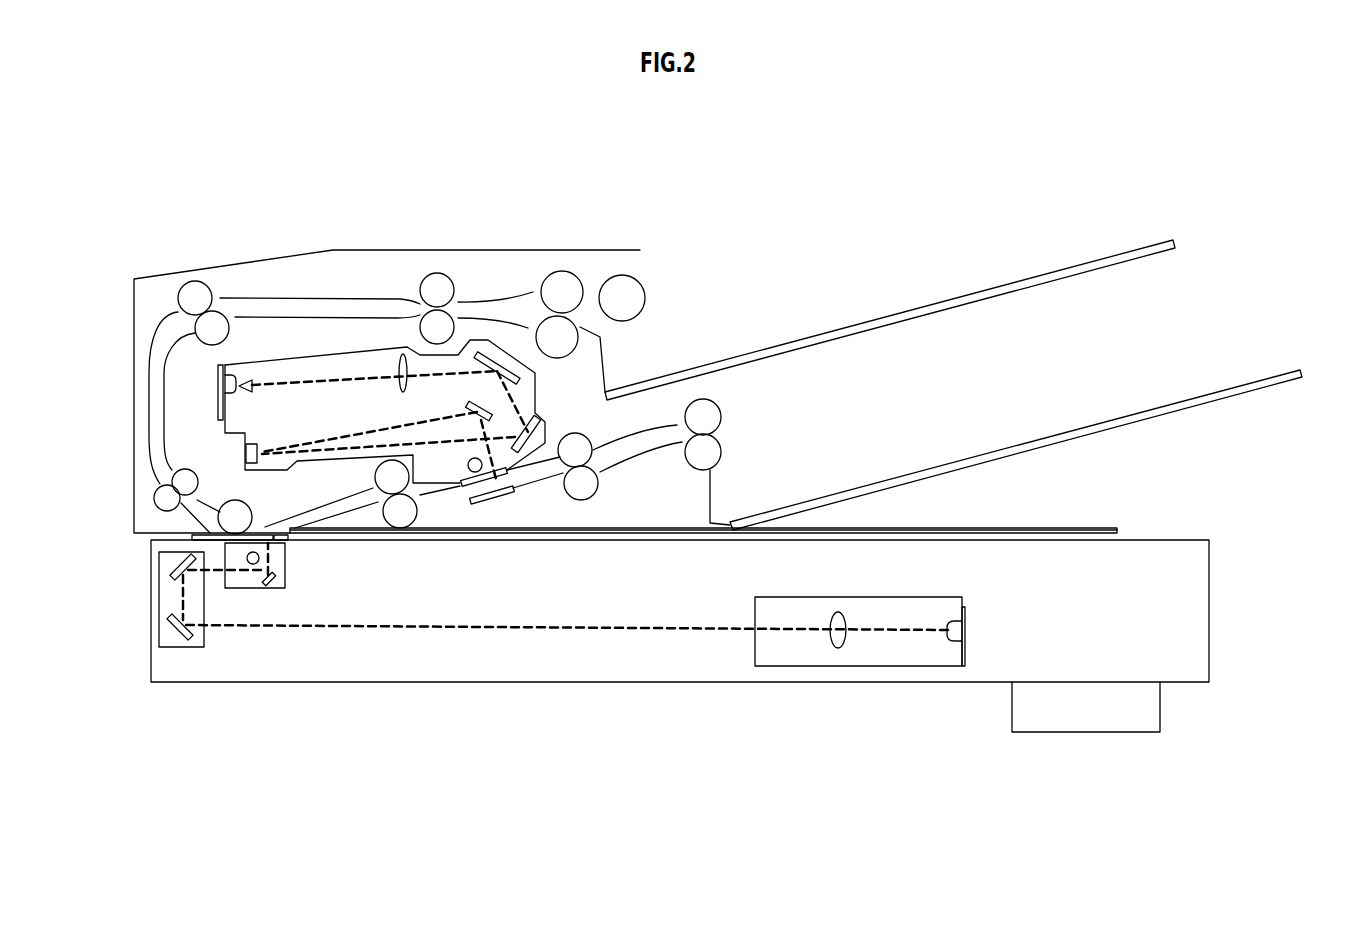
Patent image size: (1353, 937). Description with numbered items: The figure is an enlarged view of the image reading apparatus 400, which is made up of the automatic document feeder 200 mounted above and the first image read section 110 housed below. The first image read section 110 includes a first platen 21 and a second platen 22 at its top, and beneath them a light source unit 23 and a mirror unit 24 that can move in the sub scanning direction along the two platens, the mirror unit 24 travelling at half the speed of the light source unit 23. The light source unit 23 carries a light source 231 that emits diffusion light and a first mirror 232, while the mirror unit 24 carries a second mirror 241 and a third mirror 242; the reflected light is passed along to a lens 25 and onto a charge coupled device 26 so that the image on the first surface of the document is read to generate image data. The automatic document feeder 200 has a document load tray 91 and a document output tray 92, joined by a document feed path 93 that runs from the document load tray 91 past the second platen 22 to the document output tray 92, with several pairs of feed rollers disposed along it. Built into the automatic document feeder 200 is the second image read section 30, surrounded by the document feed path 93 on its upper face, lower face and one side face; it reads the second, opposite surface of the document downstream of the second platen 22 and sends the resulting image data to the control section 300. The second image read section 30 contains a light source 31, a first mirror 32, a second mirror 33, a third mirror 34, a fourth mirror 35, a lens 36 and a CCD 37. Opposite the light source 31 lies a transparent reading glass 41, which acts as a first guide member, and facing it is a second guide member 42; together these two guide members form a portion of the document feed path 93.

The image reading apparatus 400 is at (162, 272).
The automatic document feeder 200 is at (133, 372).
The document feed path 93 is at (333, 308).
The second image read section 30 is at (399, 411).
The document load tray 91 is at (960, 292).
The document output tray 92 is at (1015, 450).
The fourth mirror 35 is at (522, 377).
The third mirror 34 is at (538, 407).
The CCD 37 is at (234, 399).
The lens 36 is at (400, 385).
The first mirror 32 is at (470, 408).
The second mirror 33 is at (258, 446).
The light source 31 is at (467, 466).
The reading glass 41 is at (462, 485).
The second guide member 42 is at (493, 503).
The second platen 22 is at (203, 538).
The first platen 21 is at (1067, 536).
The first image read section 110 is at (150, 613).
The control section 300 is at (1130, 725).
The mirror unit 24 is at (148, 649).
The second mirror 241 is at (158, 565).
The third mirror 242 is at (160, 645).
The light source unit 23 is at (283, 644).
The light source 231 is at (280, 556).
The first mirror 232 is at (280, 586).
The lens 25 is at (837, 648).
The CCD 26 is at (953, 640).